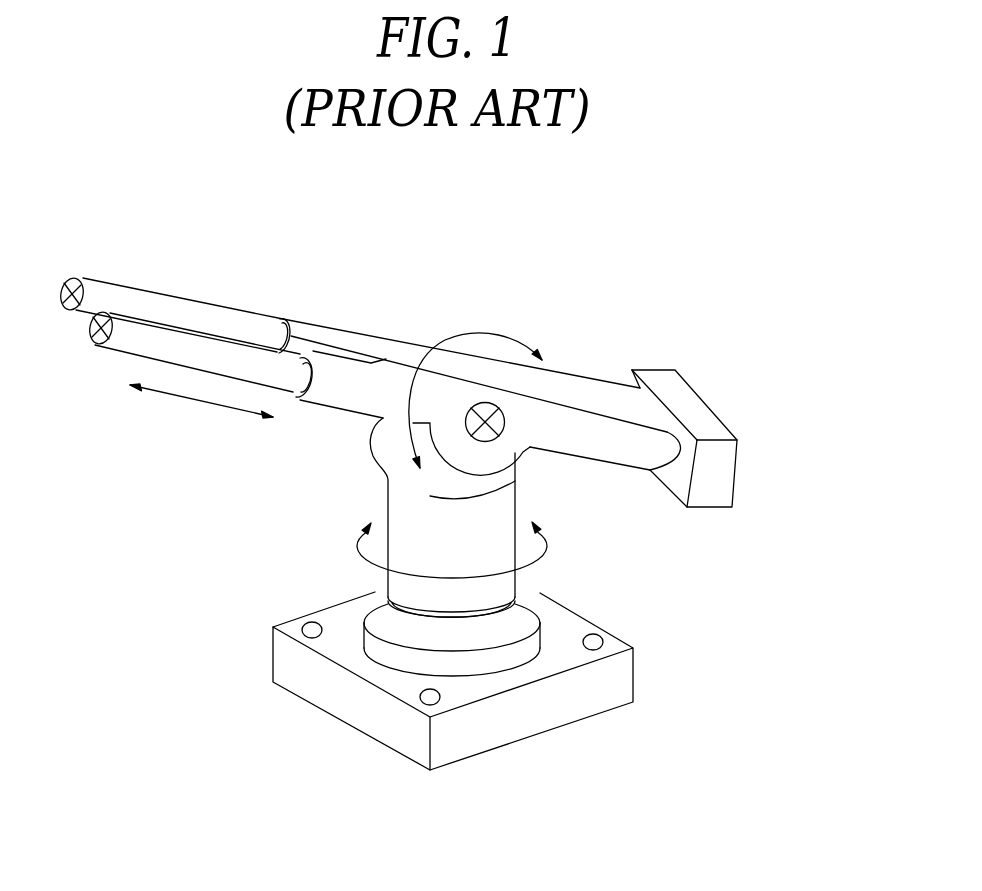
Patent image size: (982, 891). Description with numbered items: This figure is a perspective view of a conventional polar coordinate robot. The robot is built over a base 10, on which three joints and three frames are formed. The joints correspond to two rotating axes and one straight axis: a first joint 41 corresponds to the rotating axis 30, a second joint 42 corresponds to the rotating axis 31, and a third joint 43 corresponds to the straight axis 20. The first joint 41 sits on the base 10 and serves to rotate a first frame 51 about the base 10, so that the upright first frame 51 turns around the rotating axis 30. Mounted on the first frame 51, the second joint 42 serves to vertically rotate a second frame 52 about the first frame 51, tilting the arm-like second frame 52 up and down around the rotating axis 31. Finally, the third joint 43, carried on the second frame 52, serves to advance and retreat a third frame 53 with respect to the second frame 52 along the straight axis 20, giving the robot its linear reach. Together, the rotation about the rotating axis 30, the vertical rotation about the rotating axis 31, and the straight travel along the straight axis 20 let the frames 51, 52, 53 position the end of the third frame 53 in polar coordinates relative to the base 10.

The base 10 is at (633, 672).
The straight axis 20 is at (200, 401).
The rotating axis 30 is at (543, 550).
The rotating axis 31 is at (503, 338).
The first joint 41 is at (520, 601).
The second joint 42 is at (500, 410).
The third joint 43 is at (313, 352).
The first frame 51 is at (400, 505).
The second frame 52 is at (610, 398).
The third frame 53 is at (186, 328).